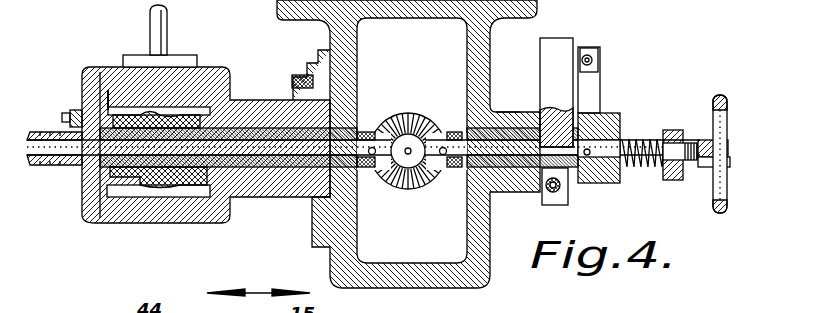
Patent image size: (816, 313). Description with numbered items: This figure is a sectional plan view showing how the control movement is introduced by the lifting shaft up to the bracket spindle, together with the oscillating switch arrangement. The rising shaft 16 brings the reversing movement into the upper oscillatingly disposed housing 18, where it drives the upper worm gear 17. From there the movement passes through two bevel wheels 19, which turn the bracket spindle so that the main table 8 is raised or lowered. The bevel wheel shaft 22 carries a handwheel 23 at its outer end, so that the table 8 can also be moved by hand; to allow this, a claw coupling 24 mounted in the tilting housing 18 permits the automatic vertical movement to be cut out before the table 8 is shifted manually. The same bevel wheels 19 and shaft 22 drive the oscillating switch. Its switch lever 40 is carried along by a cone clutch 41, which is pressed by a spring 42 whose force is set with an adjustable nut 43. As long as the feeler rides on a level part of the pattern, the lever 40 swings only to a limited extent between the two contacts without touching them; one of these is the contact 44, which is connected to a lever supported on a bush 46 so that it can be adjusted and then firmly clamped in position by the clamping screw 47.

The main table 8 is at (387, 280).
The rising shaft 16 is at (157, 28).
The upper worm gear 17 is at (163, 147).
The upper oscillatingly disposed housing 18 is at (130, 215).
The bevel wheels 19 is at (443, 133).
The bevel wheel shaft 22 is at (510, 150).
The handwheel 23 is at (727, 100).
The claw coupling 24 is at (42, 165).
The oscillating switch lever 40 is at (590, 90).
The cone clutch 41 is at (588, 172).
The spring 42 is at (628, 142).
The adjustable nut 43 is at (677, 132).
The contact 44 is at (555, 45).
The bush 46 is at (505, 112).
The clamping screw 47 is at (553, 195).